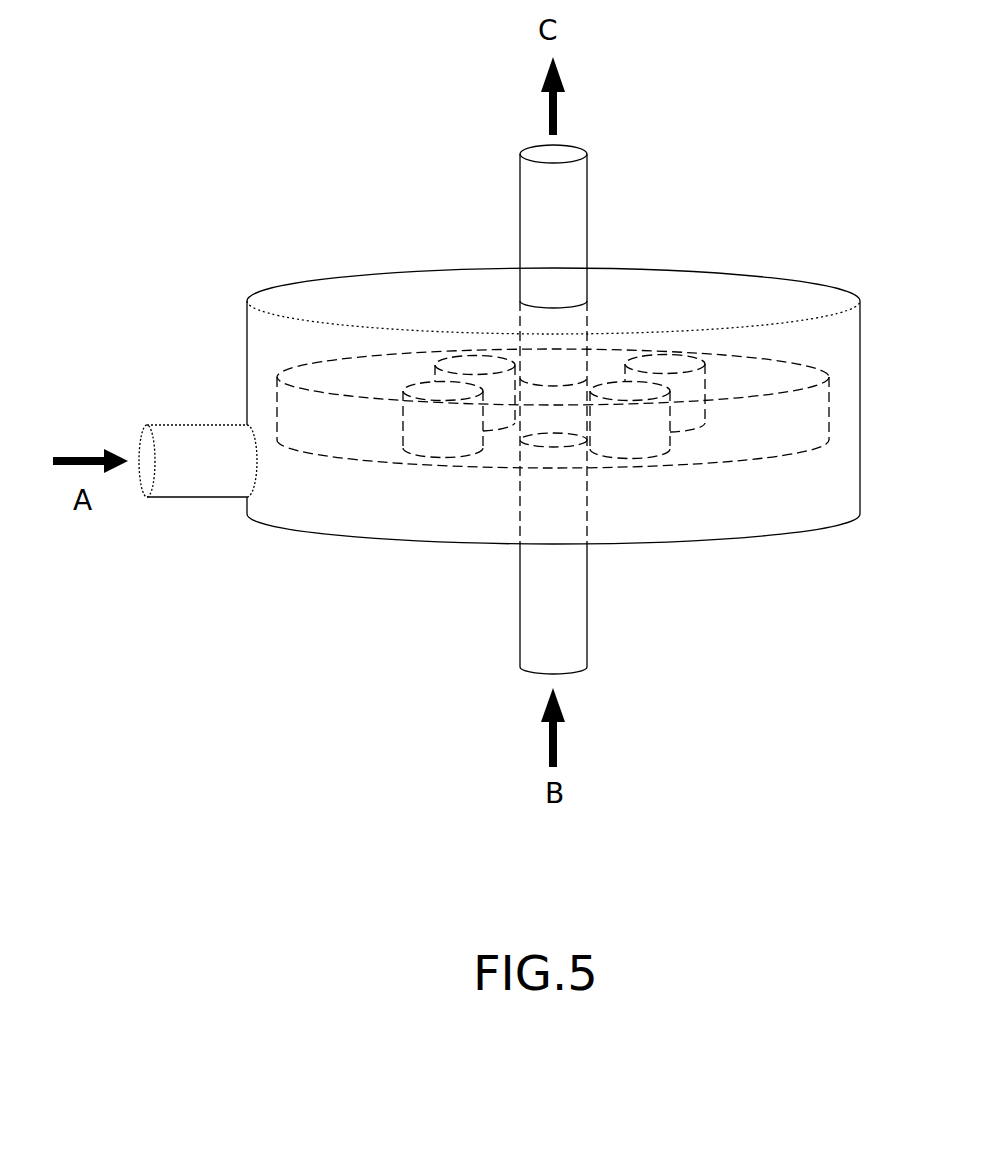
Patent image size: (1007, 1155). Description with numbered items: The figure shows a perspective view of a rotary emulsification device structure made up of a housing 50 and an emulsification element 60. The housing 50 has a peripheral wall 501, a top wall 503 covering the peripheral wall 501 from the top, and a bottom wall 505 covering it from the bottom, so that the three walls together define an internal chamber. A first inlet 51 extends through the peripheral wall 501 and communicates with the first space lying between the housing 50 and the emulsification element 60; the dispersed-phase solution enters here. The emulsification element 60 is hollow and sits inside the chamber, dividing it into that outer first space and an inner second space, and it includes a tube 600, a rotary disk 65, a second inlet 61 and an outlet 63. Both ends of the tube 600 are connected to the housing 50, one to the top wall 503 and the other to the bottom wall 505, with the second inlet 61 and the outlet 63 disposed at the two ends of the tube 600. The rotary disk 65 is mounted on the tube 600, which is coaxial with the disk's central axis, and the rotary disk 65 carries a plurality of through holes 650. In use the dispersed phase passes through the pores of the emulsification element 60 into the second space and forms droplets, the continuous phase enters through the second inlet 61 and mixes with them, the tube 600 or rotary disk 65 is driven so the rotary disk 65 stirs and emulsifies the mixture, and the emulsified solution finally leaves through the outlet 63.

The housing 50 is at (481, 421).
The peripheral wall 501 is at (247, 340).
The top wall 503 is at (362, 295).
The bottom wall 505 is at (772, 535).
The first inlet 51 is at (147, 463).
The emulsification element 60 is at (599, 414).
The tube 600 is at (555, 414).
The outlet 63 is at (565, 153).
The second inlet 61 is at (563, 677).
The rotary disk 65 is at (802, 417).
The through holes 650 is at (433, 442).